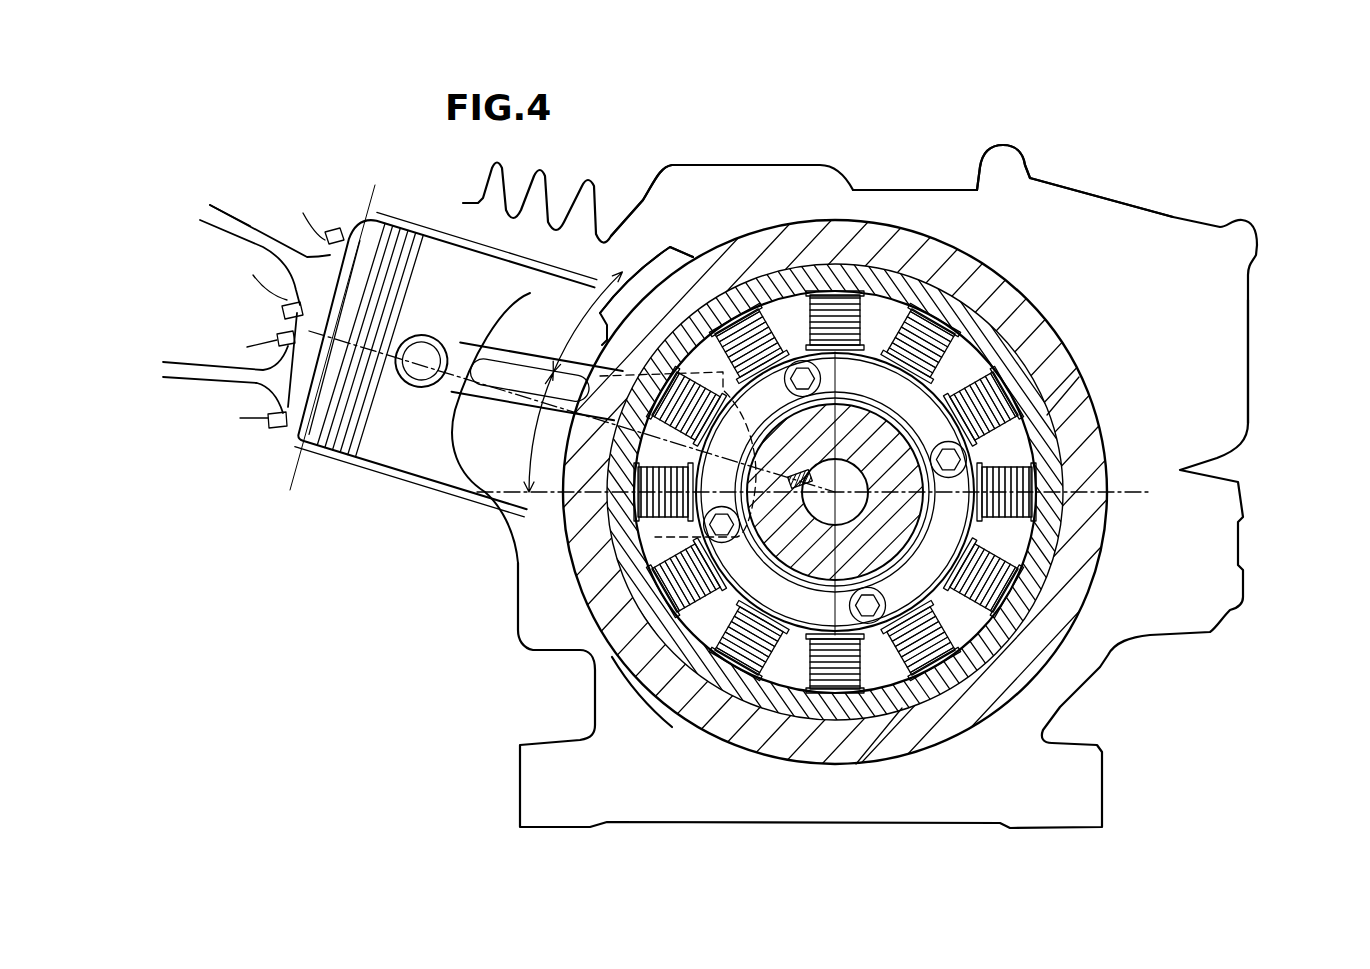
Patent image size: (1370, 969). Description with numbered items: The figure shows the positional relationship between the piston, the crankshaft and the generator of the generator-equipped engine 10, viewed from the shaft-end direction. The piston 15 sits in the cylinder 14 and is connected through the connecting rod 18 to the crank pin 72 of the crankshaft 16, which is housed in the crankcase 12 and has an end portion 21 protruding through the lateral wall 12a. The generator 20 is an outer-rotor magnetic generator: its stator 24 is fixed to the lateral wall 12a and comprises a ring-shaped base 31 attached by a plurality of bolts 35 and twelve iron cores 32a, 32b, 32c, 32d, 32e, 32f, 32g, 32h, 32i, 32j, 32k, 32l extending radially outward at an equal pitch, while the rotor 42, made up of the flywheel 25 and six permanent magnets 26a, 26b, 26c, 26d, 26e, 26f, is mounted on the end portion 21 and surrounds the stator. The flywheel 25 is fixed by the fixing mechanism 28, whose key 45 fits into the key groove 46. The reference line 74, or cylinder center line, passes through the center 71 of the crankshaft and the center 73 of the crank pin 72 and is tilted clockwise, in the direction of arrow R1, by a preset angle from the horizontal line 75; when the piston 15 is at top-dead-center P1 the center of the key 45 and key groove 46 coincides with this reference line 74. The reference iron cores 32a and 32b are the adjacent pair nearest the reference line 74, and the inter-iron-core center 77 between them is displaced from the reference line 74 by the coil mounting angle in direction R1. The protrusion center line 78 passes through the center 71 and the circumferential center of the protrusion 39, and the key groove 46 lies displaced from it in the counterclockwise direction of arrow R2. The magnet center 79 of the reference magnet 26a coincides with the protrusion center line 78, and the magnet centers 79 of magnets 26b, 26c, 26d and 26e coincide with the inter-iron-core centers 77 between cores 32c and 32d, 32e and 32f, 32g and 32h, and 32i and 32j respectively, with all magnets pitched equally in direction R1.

The generator-equipped engine 10 is at (345, 122).
The crankcase 12 is at (1175, 215).
The lateral wall 12a is at (1108, 232).
The cylinder 14 is at (477, 273).
The piston 15 is at (430, 275).
The crankshaft 16 is at (812, 483).
The connecting rod 18 is at (345, 478).
The generator 20 is at (1184, 308).
The end portion 21 is at (895, 397).
The stator 24 is at (1003, 305).
The flywheel 25 is at (1035, 215).
The reference magnet 26a is at (740, 335).
The magnet 26b is at (905, 330).
The magnet 26c is at (1020, 460).
The magnet 26d is at (935, 640).
The magnet 26e is at (745, 655).
The magnet 26f is at (660, 600).
The fixing mechanism 28 is at (850, 606).
The ring-shaped base 31 is at (1085, 540).
The reference iron core 32a is at (670, 395).
The reference iron core 32b is at (770, 335).
The iron core 32c is at (838, 300).
The iron core 32d is at (950, 330).
The iron core 32e is at (990, 405).
The iron core 32f is at (1060, 485).
The iron core 32g is at (990, 575).
The iron core 32h is at (925, 690).
The iron core 32i is at (838, 700).
The iron core 32j is at (705, 650).
The iron core 32k is at (655, 605).
The iron core 32l is at (650, 520).
The bolt 35 is at (1060, 400).
The protrusion 39 is at (648, 262).
The rotor 42 is at (904, 211).
The key 45 is at (748, 560).
The key groove 46 is at (858, 362).
The center of the crankshaft 71 is at (887, 567).
The crank pin 72 is at (505, 522).
The center of the crank pin 73 is at (560, 512).
The reference line 74 is at (640, 668).
The horizontal line 75 is at (445, 500).
The inter-iron-core center 77 is at (745, 305).
The protrusion center line 78 is at (633, 277).
The magnet center 79 is at (683, 337).
The top-dead-center P1 is at (322, 354).
The arrow R1 is at (816, 58).
The arrow R2 is at (737, 62).